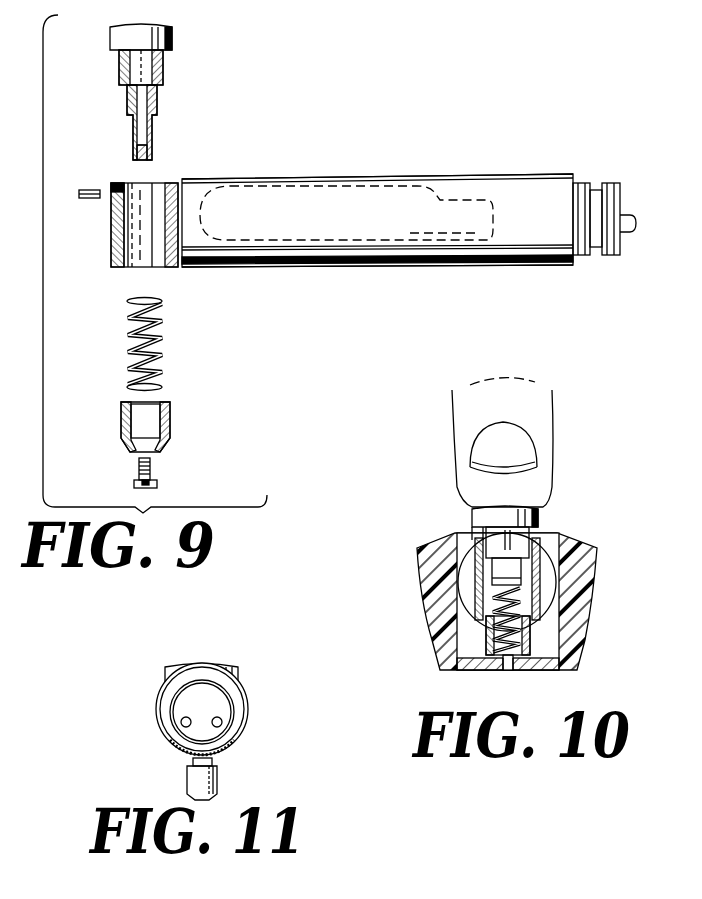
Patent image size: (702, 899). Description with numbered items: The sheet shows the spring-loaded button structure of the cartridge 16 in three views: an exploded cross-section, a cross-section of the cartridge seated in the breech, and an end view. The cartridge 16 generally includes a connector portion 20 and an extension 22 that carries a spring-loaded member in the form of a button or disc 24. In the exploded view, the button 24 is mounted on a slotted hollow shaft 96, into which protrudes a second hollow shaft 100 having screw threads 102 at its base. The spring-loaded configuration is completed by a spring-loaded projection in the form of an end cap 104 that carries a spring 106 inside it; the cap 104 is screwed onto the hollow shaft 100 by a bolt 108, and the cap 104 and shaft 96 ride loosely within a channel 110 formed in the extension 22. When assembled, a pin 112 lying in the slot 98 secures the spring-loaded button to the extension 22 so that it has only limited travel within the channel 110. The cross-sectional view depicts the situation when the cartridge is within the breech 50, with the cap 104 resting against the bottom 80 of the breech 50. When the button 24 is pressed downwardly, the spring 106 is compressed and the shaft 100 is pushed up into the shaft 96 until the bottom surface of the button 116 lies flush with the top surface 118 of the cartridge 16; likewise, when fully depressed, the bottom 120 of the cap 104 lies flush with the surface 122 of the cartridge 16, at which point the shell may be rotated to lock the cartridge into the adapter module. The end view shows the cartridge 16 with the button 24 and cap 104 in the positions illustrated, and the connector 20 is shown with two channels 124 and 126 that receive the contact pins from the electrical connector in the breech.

In FIG. 9, the cartridge 16 is at (433, 175).
In FIG. 11, the cartridge 16 is at (158, 736).
In FIG. 9, the connector portion 20 is at (615, 183).
In FIG. 11, the connector portion 20 is at (213, 703).
In FIG. 9, the extension 22 is at (170, 183).
In FIG. 9, the button 24 is at (172, 33).
In FIG. 10, the button 24 is at (538, 512).
In FIG. 11, the button 24 is at (212, 660).
In FIG. 10, the breech 50 is at (578, 655).
In FIG. 10, the bottom of breech 80 is at (540, 672).
In FIG. 9, the slotted hollow shaft 96 is at (163, 70).
In FIG. 10, the slotted hollow shaft 96 is at (540, 522).
In FIG. 9, the slot 98 is at (119, 63).
In FIG. 9, the hollow shaft 100 is at (133, 127).
In FIG. 10, the hollow shaft 100 is at (545, 632).
In FIG. 9, the screw threads 102 is at (140, 160).
In FIG. 9, the end cap 104 is at (121, 415).
In FIG. 10, the end cap 104 is at (487, 643).
In FIG. 11, the end cap 104 is at (217, 782).
In FIG. 9, the spring 106 is at (127, 325).
In FIG. 10, the spring 106 is at (515, 597).
In FIG. 9, the bolt 108 is at (139, 468).
In FIG. 9, the channel 110 is at (137, 267).
In FIG. 9, the pin 112 is at (89, 198).
In FIG. 10, the bottom surface of the button 116 is at (472, 515).
In FIG. 9, the top surface of cartridge 118 is at (308, 177).
In FIG. 10, the bottom of cap 120 is at (507, 672).
In FIG. 9, the surface of cartridge 122 is at (307, 263).
In FIG. 11, the channel 124 is at (186, 718).
In FIG. 11, the channel 126 is at (220, 718).